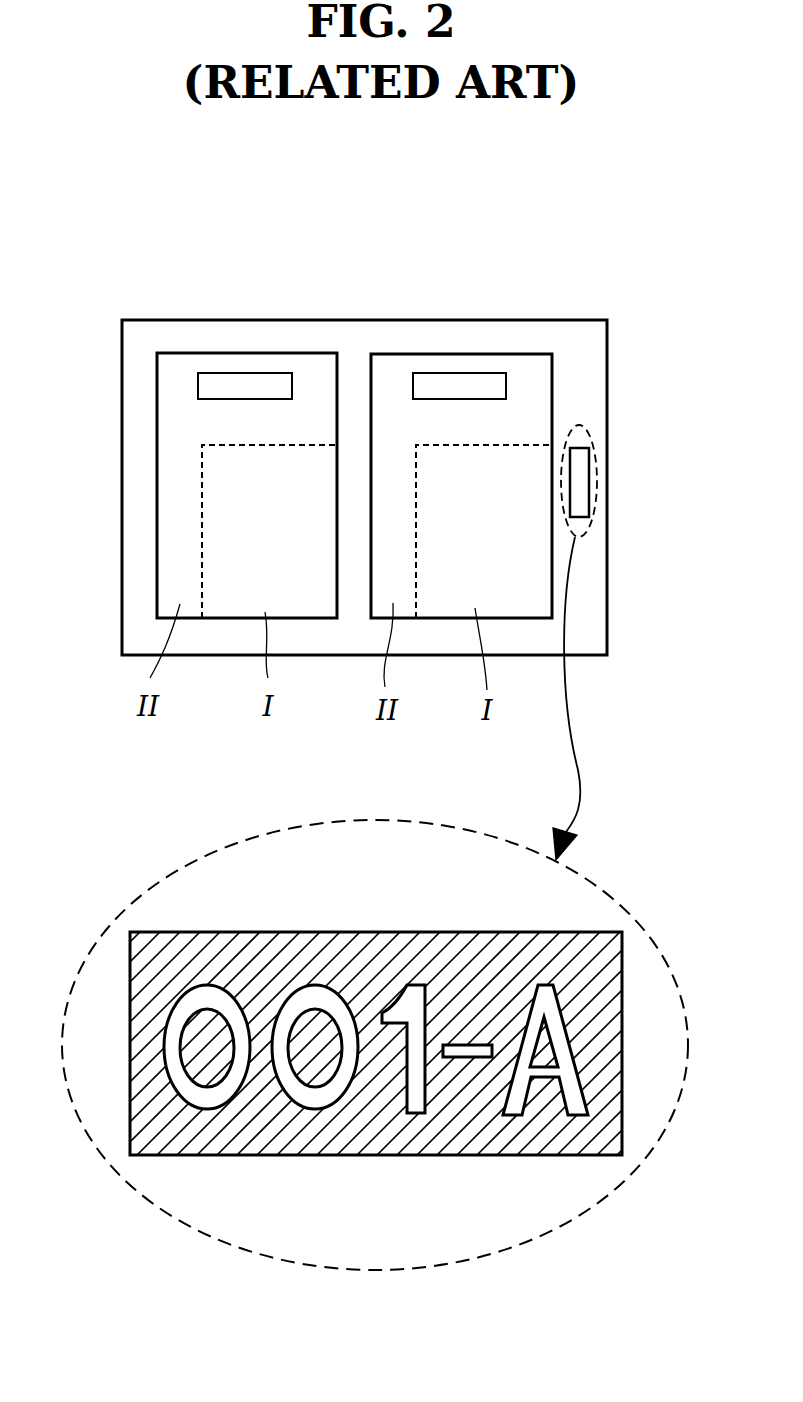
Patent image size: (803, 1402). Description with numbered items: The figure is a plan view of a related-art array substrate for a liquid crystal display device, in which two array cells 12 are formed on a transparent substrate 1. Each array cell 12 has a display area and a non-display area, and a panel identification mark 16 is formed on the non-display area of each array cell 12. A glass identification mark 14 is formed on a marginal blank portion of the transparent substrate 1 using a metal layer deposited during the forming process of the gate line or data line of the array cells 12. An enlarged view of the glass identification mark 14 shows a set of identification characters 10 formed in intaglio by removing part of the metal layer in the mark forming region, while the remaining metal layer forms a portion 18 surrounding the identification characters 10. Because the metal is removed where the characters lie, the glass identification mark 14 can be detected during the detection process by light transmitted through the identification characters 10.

The transparent substrate 1 is at (600, 370).
The array cells 12 is at (297, 350).
The panel identification mark 16 is at (209, 373).
The glass identification mark 14 is at (376, 879).
The identification characters 10 is at (208, 1098).
The portion 18 is at (283, 1147).